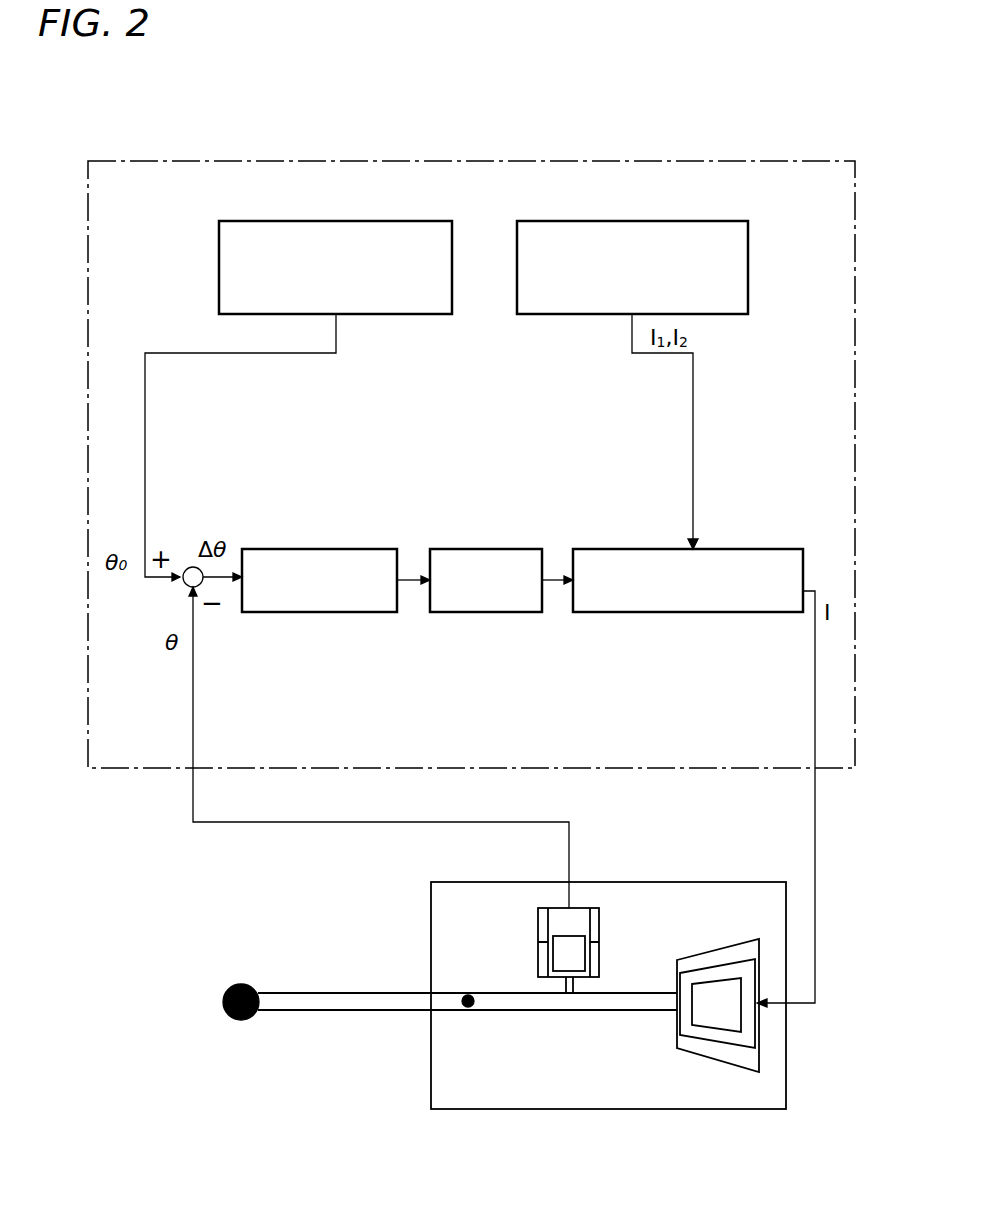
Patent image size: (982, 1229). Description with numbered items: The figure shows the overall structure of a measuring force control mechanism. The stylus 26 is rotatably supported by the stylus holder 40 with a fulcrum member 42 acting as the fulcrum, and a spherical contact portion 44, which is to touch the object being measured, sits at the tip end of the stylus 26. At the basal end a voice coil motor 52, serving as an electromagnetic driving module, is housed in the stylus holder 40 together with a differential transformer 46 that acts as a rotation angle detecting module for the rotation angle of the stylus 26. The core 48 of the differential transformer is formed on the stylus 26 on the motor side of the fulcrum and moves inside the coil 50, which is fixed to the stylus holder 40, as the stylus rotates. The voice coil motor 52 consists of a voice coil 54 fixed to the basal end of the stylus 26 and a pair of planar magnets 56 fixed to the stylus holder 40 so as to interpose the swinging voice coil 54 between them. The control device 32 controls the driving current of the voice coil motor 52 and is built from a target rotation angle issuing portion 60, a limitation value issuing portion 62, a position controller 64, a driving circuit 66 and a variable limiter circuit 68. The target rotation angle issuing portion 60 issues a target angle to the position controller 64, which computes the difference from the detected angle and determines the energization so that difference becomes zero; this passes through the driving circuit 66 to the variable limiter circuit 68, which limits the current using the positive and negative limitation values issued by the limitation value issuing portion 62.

The control device 32 is at (728, 162).
The target rotation angle issuing portion 60 is at (337, 221).
The limitation value issuing portion 62 is at (634, 221).
The position controller 64 is at (317, 549).
The driving circuit 66 is at (498, 549).
The variable limiter circuit 68 is at (762, 549).
The stylus holder 40 is at (598, 1109).
The contact portion 44 is at (238, 985).
The stylus 26 is at (377, 993).
The fulcrum member 42 is at (467, 995).
The differential transformer 46 is at (597, 917).
The core 48 is at (578, 957).
The coil 50 is at (597, 927).
The voice coil motor 52 is at (739, 1033).
The voice coil 54 is at (713, 972).
The planar magnets 56 is at (697, 1057).